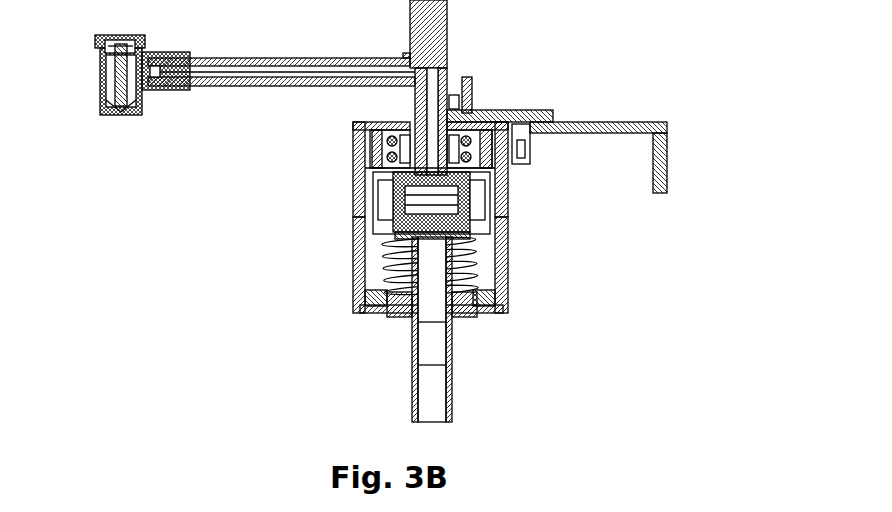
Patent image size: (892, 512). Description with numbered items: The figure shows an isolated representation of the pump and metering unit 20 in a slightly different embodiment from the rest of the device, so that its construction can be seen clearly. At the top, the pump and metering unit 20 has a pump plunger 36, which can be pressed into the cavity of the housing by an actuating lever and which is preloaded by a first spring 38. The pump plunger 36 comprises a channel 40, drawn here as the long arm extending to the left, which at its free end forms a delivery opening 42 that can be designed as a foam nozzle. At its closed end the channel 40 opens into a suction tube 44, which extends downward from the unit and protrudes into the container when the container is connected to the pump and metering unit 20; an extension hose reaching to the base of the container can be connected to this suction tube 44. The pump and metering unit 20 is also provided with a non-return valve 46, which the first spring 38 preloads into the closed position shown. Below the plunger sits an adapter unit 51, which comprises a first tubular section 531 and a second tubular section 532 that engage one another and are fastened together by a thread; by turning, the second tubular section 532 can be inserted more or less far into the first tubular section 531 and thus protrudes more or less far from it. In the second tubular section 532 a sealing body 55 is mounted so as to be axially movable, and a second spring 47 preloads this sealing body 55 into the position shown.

The pump and metering unit 20 is at (372, 211).
The pump plunger 36 is at (447, 5).
The first spring 38 is at (377, 215).
The channel 40 is at (238, 72).
The delivery opening 42 is at (122, 112).
The suction tube 44 is at (423, 383).
The non-return valve 46 is at (420, 238).
The second spring 47 is at (377, 298).
The adapter unit 51 is at (435, 217).
The first tubular section 531 is at (503, 262).
The second tubular section 532 is at (500, 297).
The sealing body 55 is at (458, 308).